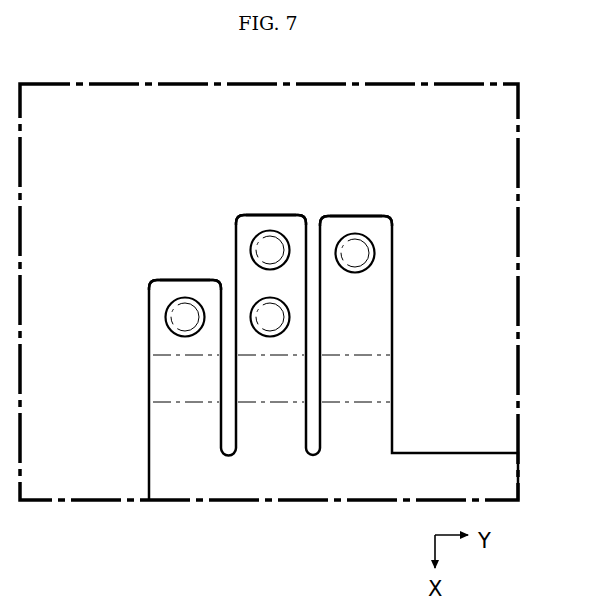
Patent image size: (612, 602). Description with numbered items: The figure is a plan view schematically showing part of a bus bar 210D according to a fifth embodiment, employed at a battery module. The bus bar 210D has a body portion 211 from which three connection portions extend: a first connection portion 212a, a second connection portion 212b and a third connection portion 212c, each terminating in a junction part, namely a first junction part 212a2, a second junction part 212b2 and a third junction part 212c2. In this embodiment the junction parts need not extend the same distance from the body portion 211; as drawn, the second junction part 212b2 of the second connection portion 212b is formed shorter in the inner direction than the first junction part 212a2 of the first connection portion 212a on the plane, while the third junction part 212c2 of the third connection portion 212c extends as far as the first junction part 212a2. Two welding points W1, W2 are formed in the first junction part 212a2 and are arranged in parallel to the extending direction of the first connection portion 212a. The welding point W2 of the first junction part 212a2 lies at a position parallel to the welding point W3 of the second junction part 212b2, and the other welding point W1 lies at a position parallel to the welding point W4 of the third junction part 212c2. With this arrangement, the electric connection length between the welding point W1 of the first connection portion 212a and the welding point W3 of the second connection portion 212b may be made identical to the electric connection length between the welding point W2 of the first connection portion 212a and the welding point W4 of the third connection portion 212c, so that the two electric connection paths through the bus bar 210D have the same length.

The bus bar 210D is at (135, 133).
The body portion 211 is at (510, 479).
The first connection portion 212a is at (262, 160).
The first junction part 212a2 is at (265, 222).
The second connection portion 212b is at (143, 240).
The second junction part 212b2 is at (187, 289).
The third connection portion 212c is at (398, 172).
The third junction part 212c2 is at (352, 223).
The welding point W1 is at (280, 262).
The welding point W2 is at (270, 325).
The welding point W3 is at (180, 313).
The welding point W4 is at (360, 255).